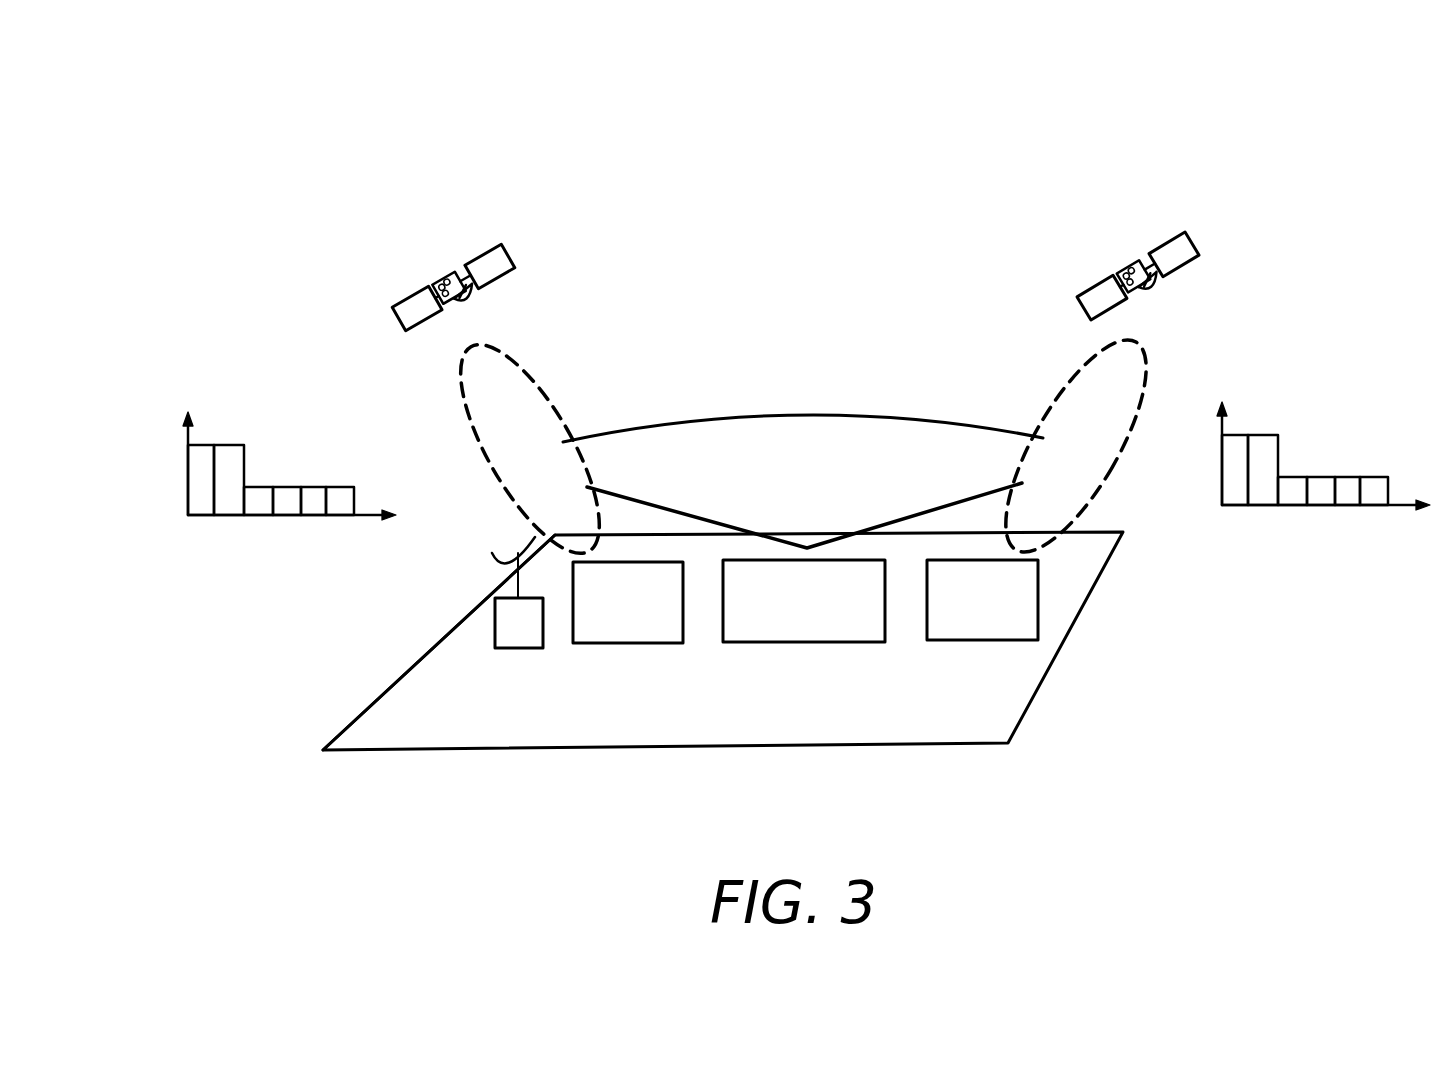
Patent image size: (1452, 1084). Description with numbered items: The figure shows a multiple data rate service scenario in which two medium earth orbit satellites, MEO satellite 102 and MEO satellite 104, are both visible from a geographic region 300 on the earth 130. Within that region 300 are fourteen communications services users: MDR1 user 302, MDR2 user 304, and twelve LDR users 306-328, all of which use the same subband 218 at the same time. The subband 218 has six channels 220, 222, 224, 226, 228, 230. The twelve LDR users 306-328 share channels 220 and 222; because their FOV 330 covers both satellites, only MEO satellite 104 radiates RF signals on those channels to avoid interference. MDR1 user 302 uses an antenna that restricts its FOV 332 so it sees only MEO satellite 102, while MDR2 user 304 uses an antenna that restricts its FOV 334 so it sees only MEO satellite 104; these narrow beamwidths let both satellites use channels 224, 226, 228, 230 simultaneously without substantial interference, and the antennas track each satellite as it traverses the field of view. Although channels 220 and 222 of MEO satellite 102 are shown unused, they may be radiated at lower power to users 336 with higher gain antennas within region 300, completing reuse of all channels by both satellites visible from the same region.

The MEO satellite 102 is at (423, 235).
The MEO satellite 104 is at (1214, 195).
The earth 130 is at (377, 750).
The subband 218 is at (1220, 472).
The channel 220 is at (1238, 443).
The channel 222 is at (1258, 443).
The channel 224 is at (1292, 485).
The channel 226 is at (1313, 485).
The channel 228 is at (1340, 485).
The channel 230 is at (1373, 483).
The geographic region 300 is at (917, 732).
The MDR1 user 302 is at (630, 637).
The MDR2 user 304 is at (942, 635).
The LDR users 306-328 is at (745, 635).
The FOV 330 is at (770, 427).
The FOV 332 is at (527, 388).
The FOV 334 is at (1067, 402).
The users 336 is at (517, 648).